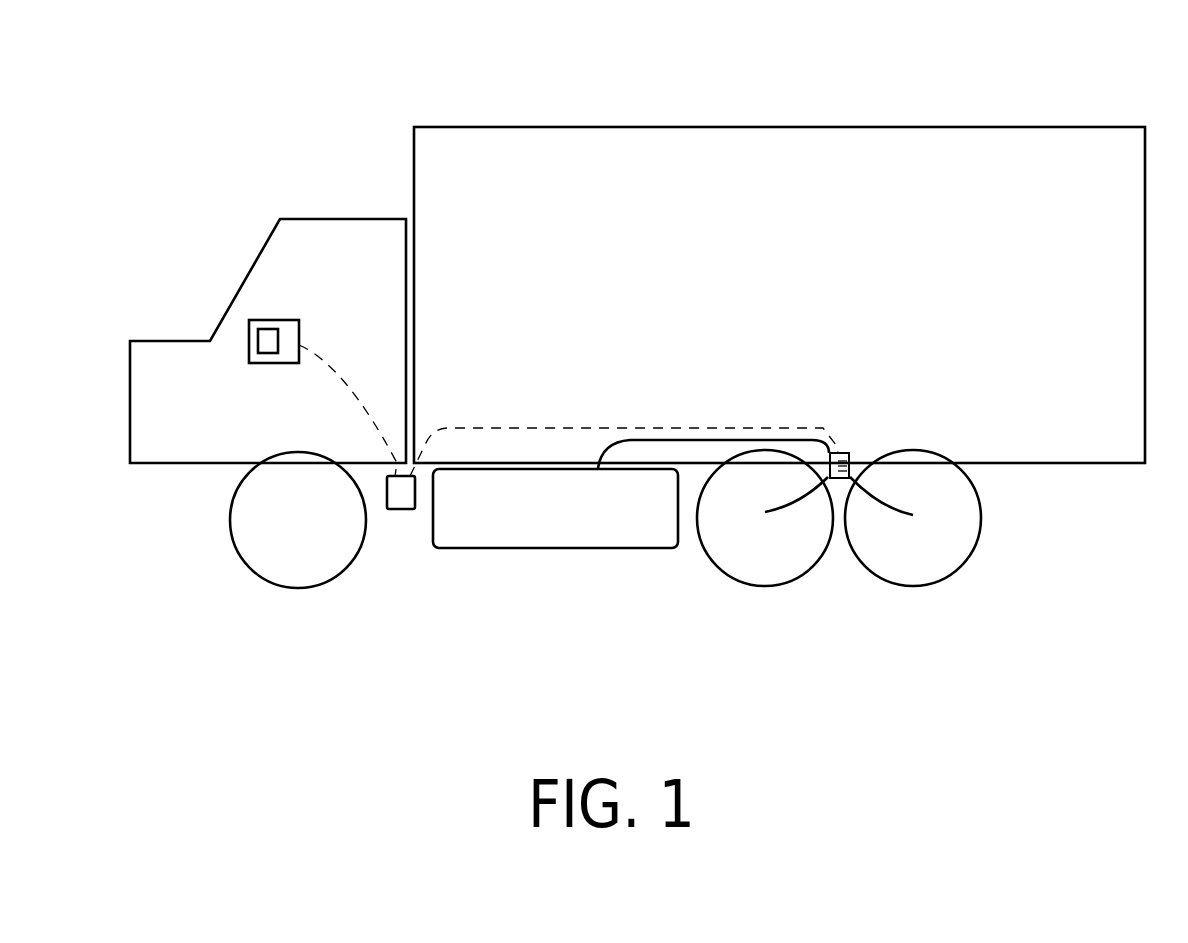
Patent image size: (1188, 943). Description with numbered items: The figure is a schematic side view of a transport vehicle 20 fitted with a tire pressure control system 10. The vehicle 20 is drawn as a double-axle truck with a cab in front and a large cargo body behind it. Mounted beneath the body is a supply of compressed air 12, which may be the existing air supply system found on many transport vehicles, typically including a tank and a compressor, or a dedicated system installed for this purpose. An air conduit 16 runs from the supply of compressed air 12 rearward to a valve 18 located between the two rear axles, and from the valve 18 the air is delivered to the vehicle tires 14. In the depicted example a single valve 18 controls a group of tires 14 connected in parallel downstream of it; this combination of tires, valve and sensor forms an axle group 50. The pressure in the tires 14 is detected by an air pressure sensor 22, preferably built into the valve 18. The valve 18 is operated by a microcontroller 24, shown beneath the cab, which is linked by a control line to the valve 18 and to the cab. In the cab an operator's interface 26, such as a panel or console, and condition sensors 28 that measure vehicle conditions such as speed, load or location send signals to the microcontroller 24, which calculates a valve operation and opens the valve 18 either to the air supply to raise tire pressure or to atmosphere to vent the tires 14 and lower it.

The tire pressure control system 10 is at (672, 395).
The supply of compressed air 12 is at (495, 535).
The vehicle tires 14 is at (898, 560).
The air conduit 16 is at (800, 436).
The valve 18 is at (855, 456).
The transport vehicle 20 is at (778, 150).
The air pressure sensor 22 is at (852, 463).
The microcontroller 24 is at (402, 497).
The operator's interface 26 is at (285, 330).
The condition sensors 28 is at (262, 342).
The axle group 50 is at (947, 510).